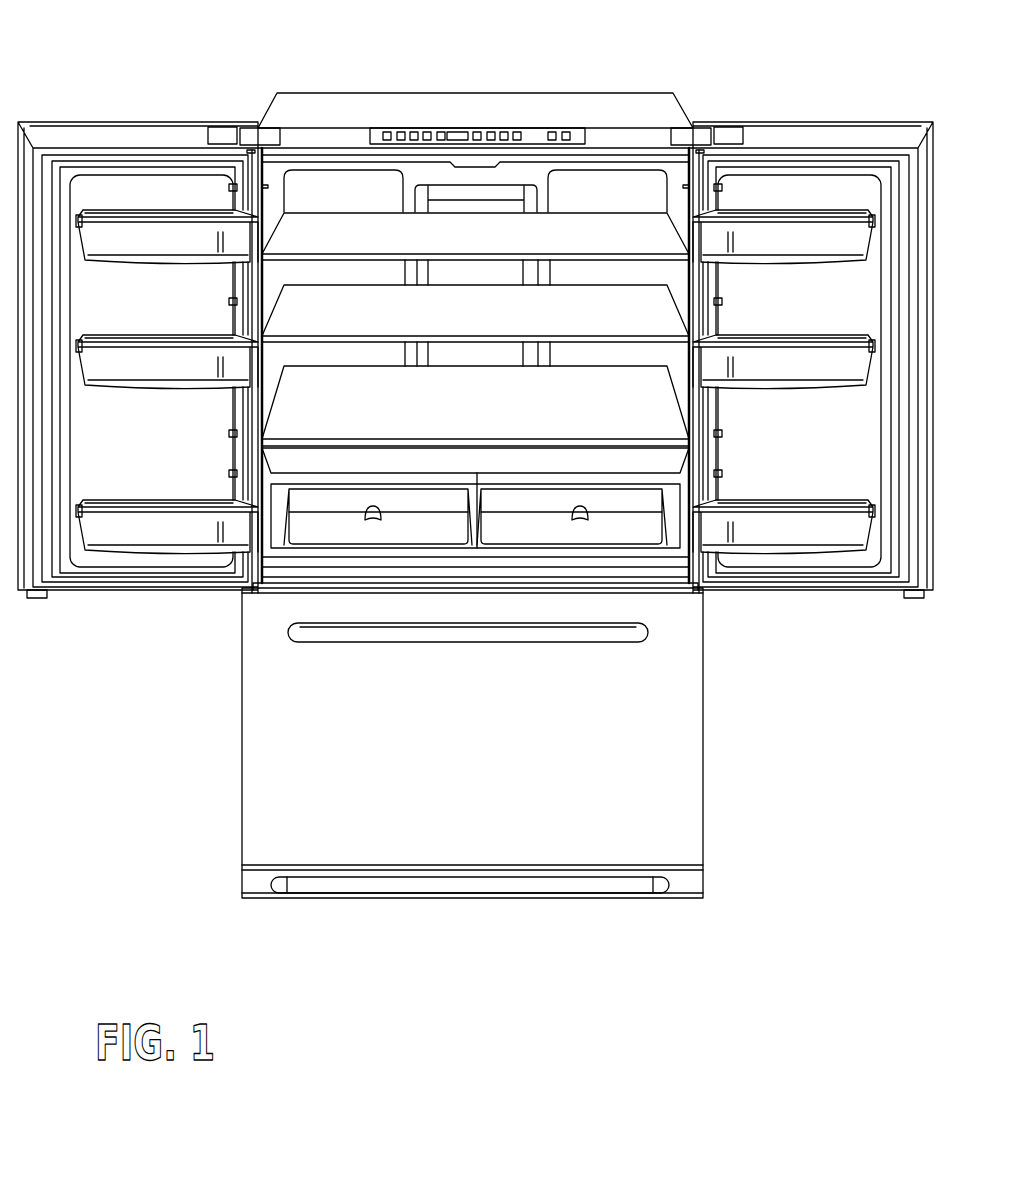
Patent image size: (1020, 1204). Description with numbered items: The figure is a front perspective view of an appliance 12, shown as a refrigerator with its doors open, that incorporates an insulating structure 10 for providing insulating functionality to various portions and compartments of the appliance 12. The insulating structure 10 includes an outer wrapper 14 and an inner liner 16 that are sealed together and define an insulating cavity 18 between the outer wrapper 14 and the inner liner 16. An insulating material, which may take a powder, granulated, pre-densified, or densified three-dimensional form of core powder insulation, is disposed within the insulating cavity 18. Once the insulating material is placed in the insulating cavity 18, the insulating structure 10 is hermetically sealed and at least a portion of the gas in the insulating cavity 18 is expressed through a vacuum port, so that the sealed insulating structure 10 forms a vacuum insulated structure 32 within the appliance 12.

The insulating structure 10 is at (475, 453).
The appliance 12 is at (456, 455).
The outer wrapper 14 is at (658, 118).
The inner liner 16 is at (273, 373).
The insulating cavity 18 is at (283, 503).
The vacuum insulated structure 32 is at (304, 92).